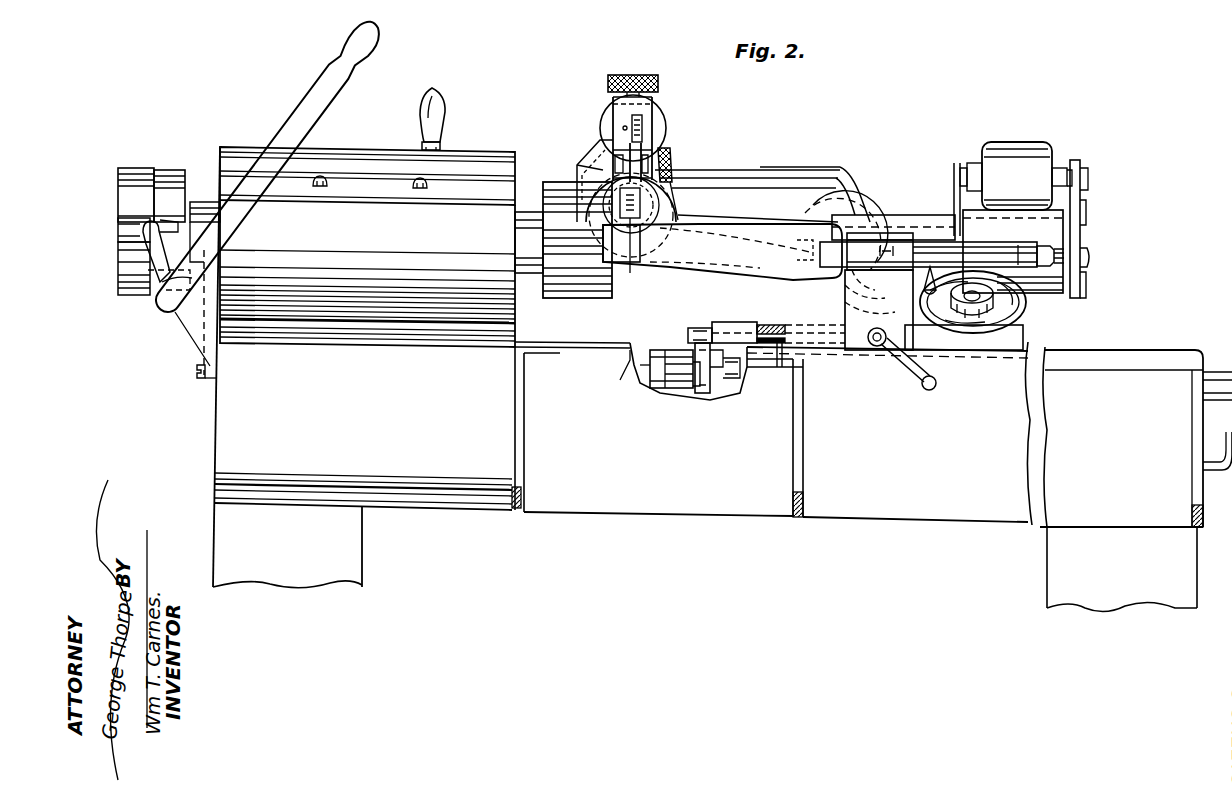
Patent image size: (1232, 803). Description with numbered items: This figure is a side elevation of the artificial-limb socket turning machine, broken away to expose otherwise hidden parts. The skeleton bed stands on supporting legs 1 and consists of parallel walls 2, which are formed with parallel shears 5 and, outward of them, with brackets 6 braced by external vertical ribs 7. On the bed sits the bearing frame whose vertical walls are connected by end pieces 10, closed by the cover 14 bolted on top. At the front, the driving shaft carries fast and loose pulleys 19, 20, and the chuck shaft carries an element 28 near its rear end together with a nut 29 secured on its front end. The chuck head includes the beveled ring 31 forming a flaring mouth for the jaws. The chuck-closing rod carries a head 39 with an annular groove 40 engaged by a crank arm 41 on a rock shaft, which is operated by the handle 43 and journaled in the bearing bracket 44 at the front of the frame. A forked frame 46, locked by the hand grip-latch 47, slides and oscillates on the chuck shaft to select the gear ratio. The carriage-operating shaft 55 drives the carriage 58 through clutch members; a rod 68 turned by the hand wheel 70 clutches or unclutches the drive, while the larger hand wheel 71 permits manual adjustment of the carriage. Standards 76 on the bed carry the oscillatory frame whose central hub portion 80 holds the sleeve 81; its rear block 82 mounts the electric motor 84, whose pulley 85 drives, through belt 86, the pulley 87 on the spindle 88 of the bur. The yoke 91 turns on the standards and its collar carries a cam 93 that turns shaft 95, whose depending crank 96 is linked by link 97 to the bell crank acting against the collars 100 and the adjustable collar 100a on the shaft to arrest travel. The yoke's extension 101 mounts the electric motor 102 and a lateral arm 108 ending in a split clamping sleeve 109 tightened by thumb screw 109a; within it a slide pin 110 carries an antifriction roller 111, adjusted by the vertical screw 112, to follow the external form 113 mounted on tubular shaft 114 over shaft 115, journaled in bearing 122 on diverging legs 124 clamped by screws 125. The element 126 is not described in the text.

The supporting legs 1 is at (230, 520).
The parallel walls 2 is at (779, 434).
The parallel shears 5 is at (667, 320).
The brackets 6 is at (613, 327).
The external vertical ribs 7 is at (560, 460).
The end pieces 10 is at (367, 273).
The cover 14 is at (365, 150).
The fast pulley 19 is at (128, 168).
The loose pulley 20 is at (163, 170).
The collar 28 is at (210, 202).
The nut 29 is at (196, 202).
The ring 31 is at (560, 182).
The head 39 is at (127, 228).
The annular groove 40 is at (142, 240).
The crank arm 41 is at (157, 308).
The handle 43 is at (324, 78).
The bearing bracket 44 is at (205, 383).
The forked frame 46 is at (436, 102).
The hand grip-latch 47 is at (445, 132).
The carriage-operating shaft 55 is at (637, 372).
The carriage 58 is at (740, 322).
The rod 68 is at (1010, 336).
The hand wheel 70 is at (1027, 300).
The hand wheel 71 is at (994, 303).
The standards 76 is at (808, 310).
The central hub portion 80 is at (880, 215).
The sleeve 81 is at (956, 200).
The block 82 is at (1013, 251).
The electric motor 84 is at (1030, 142).
The pulley 85 is at (1080, 168).
The belt 86 is at (1084, 210).
The pulley 87 is at (1084, 284).
The spindle 88 is at (1091, 257).
The yoke 91 is at (810, 178).
The cam 93 is at (928, 242).
The shaft 95 is at (779, 367).
The depending crank 96 is at (700, 328).
The link 97 is at (702, 393).
The collars 100 is at (660, 388).
The adjustable collar 100a is at (683, 395).
The extension 101 is at (703, 175).
The electric motor 102 is at (603, 122).
The lateral arm 108 is at (715, 202).
The split clamping sleeve 109 is at (650, 100).
The thumb screw 109a is at (668, 150).
The slide pin 110 is at (760, 200).
The antifriction roller 111 is at (631, 241).
The vertical screw 112 is at (630, 75).
The external form 113 is at (722, 252).
The tubular shaft 114 is at (586, 252).
The shaft 115 is at (1056, 252).
The bearing 122 is at (858, 233).
The diverging legs 124 is at (879, 310).
The screws 125 is at (915, 400).
The wedge 126 is at (664, 165).